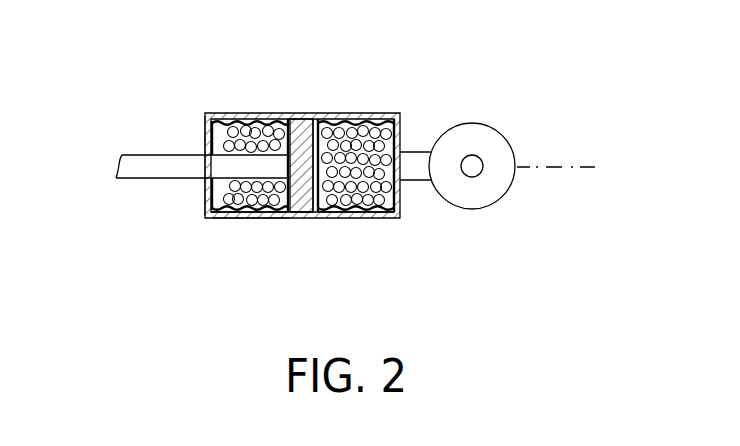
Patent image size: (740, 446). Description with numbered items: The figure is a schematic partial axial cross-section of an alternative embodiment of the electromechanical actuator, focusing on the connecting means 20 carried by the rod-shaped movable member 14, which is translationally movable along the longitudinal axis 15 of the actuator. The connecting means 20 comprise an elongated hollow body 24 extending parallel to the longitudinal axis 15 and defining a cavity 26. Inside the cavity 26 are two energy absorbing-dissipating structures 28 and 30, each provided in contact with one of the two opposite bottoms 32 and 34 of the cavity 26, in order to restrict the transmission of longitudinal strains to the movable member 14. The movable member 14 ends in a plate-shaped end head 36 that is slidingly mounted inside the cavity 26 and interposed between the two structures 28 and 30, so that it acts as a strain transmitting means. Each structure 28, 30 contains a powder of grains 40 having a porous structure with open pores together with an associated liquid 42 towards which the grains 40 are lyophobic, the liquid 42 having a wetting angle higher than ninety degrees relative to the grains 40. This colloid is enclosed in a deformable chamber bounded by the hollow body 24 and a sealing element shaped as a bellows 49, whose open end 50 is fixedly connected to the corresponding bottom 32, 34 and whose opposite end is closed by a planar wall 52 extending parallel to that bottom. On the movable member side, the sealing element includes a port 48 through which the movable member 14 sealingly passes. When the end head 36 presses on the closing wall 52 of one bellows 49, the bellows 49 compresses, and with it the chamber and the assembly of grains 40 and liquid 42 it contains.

The movable member 14 is at (149, 180).
The longitudinal axis 15 is at (555, 168).
The connecting means 20 is at (416, 183).
The hollow body 24 is at (273, 220).
The cavity 26 is at (352, 213).
The energy absorbing-dissipating structure 28 is at (237, 211).
The energy absorbing-dissipating structure 30 is at (376, 212).
The bottom 32 is at (195, 117).
The bottom 34 is at (404, 116).
The end head 36 is at (305, 118).
The grains 40 is at (231, 135).
The liquid 42 is at (360, 121).
The port 48 is at (276, 164).
The bellows 49 is at (247, 130).
The open end 50 is at (212, 218).
The wall 52 is at (299, 218).